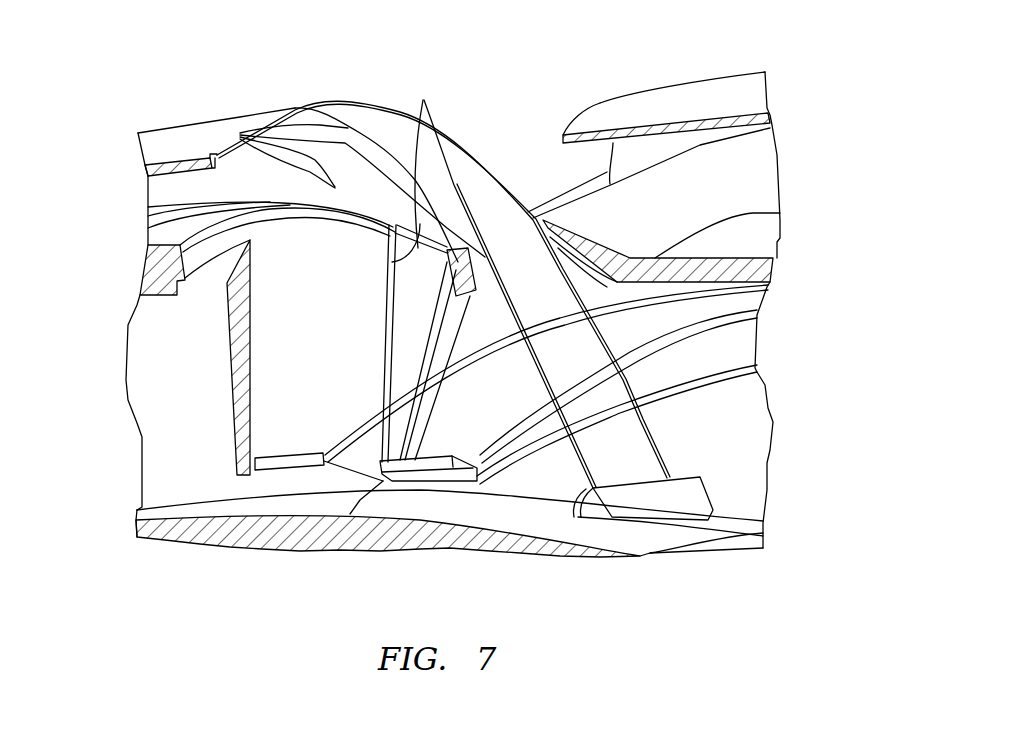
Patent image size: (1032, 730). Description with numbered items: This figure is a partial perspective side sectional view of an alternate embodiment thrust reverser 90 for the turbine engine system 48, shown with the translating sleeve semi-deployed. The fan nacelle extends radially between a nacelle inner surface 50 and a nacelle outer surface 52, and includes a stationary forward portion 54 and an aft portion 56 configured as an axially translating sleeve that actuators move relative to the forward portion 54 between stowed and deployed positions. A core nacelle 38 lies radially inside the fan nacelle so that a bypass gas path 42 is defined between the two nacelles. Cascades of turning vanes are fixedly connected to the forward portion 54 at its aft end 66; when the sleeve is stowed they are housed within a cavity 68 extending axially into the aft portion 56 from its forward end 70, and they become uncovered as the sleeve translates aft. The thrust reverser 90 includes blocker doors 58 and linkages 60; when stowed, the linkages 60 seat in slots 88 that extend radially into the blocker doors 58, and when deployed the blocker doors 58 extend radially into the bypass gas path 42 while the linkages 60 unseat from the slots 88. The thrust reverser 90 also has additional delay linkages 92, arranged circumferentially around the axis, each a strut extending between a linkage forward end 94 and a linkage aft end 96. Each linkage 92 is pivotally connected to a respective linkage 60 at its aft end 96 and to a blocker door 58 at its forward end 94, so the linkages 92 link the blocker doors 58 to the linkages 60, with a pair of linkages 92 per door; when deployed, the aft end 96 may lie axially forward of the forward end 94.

The core nacelle 38 is at (152, 540).
The bypass gas path 42 is at (152, 410).
The turbine engine system 48 is at (484, 100).
The nacelle inner surface 50 is at (137, 305).
The nacelle outer surface 52 is at (155, 143).
The stationary forward portion 54 is at (673, 82).
The aft portion 56 is at (176, 128).
The blocker door 58 is at (353, 212).
The linkage 60 is at (727, 313).
The aft end 66 is at (603, 110).
The cavity 68 is at (148, 208).
The forward end 70 is at (250, 118).
The slot 88 is at (415, 167).
The thrust reverser 90 is at (209, 431).
The linkage 92 is at (292, 463).
The linkage forward end 94 is at (250, 476).
The linkage aft end 96 is at (328, 467).